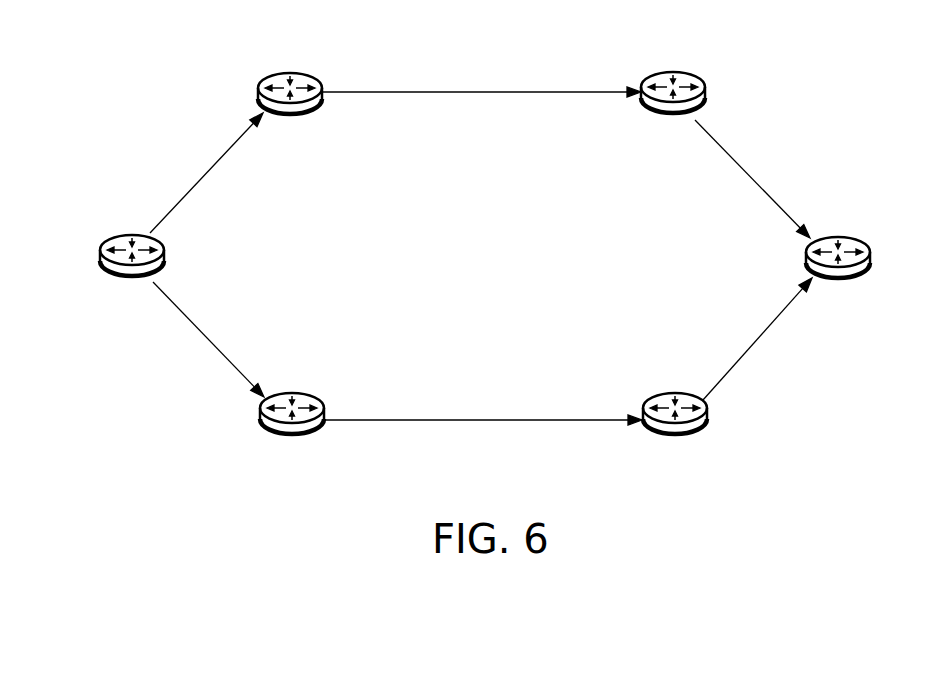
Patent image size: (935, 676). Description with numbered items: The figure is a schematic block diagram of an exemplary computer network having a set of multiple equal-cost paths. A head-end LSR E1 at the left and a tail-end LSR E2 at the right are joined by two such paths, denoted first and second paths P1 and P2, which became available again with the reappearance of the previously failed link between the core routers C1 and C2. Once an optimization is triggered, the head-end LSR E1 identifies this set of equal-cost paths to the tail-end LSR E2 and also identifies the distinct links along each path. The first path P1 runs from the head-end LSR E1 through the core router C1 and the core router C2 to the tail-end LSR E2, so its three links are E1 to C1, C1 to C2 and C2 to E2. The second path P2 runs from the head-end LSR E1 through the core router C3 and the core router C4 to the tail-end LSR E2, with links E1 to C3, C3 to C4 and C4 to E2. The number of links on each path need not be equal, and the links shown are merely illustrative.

The head-end LSR E1 is at (112, 274).
The tail-end LSR E2 is at (861, 275).
The core router C1 is at (290, 68).
The core router C2 is at (673, 68).
The core router C3 is at (292, 437).
The core router C4 is at (675, 437).
The first path P1 is at (205, 159).
The second path P2 is at (205, 354).